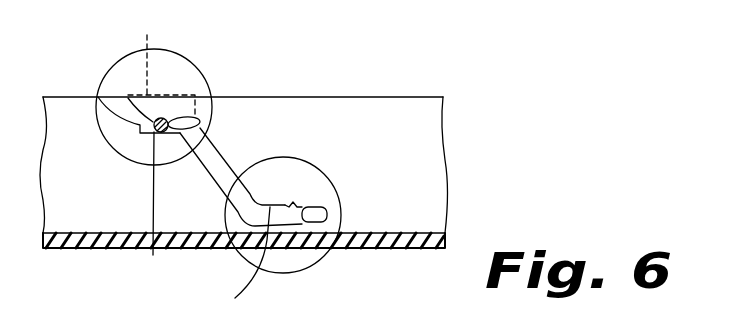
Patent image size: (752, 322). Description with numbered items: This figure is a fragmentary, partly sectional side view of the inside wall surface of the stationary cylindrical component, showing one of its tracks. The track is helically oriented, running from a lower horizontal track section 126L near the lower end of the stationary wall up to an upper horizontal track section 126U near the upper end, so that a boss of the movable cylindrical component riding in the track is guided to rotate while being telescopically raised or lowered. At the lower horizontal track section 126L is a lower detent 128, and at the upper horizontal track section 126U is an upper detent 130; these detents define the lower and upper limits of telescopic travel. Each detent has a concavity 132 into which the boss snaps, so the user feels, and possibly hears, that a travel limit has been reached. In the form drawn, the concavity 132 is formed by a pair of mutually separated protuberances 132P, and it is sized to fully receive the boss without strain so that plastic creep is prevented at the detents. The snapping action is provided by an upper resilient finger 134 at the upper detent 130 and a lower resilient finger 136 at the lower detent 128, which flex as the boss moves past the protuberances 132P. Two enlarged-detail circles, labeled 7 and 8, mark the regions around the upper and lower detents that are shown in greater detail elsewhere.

The detail circle of FIG. 7 is at (187, 95).
The detail circle of FIG. 8 is at (308, 237).
The upper resilient finger 134 is at (159, 65).
The upper detent 130 is at (141, 125).
The concavity 132 is at (159, 135).
The protuberances 132P is at (200, 125).
The lower detent 128 is at (318, 199).
The lower resilient finger 136 is at (327, 212).
The upper horizontal track section 126U is at (142, 207).
The lower horizontal track section 126L is at (231, 260).